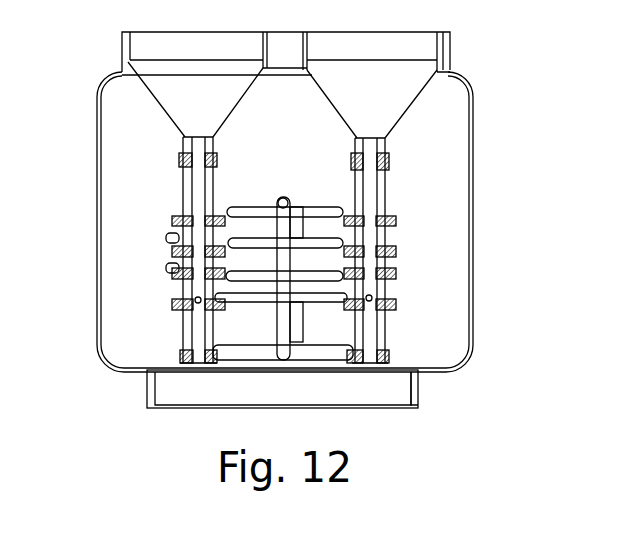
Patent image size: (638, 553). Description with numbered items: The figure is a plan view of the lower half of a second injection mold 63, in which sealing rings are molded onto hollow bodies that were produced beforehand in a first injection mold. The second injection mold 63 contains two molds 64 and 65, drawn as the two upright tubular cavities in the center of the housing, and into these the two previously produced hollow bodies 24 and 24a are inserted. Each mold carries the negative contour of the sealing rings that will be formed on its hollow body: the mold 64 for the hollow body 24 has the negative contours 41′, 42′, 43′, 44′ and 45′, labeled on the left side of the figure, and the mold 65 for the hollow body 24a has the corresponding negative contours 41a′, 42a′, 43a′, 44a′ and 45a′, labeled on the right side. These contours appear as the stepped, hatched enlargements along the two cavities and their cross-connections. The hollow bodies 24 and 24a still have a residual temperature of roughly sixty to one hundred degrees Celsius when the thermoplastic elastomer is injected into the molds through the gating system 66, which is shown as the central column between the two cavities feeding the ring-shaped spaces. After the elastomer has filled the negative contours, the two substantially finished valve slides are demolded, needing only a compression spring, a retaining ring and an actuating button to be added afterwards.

The second injection mold 63 is at (447, 132).
The mold 65 is at (420, 192).
The mold 64 is at (178, 170).
The negative contour 45a′ is at (420, 220).
The hollow body 24 is at (176, 214).
The negative contour 44′ is at (176, 252).
The negative contour 43′ is at (176, 292).
The negative contour 42′ is at (175, 354).
The negative contour 44a′ is at (420, 245).
The negative contour 43a′ is at (420, 291).
The negative contour 42a′ is at (420, 300).
The hollow body 24a is at (420, 337).
The negative contour 45′ is at (228, 207).
The gating system 66 is at (285, 198).
The negative contour 41′ is at (153, 372).
The negative contour 41a′ is at (420, 355).